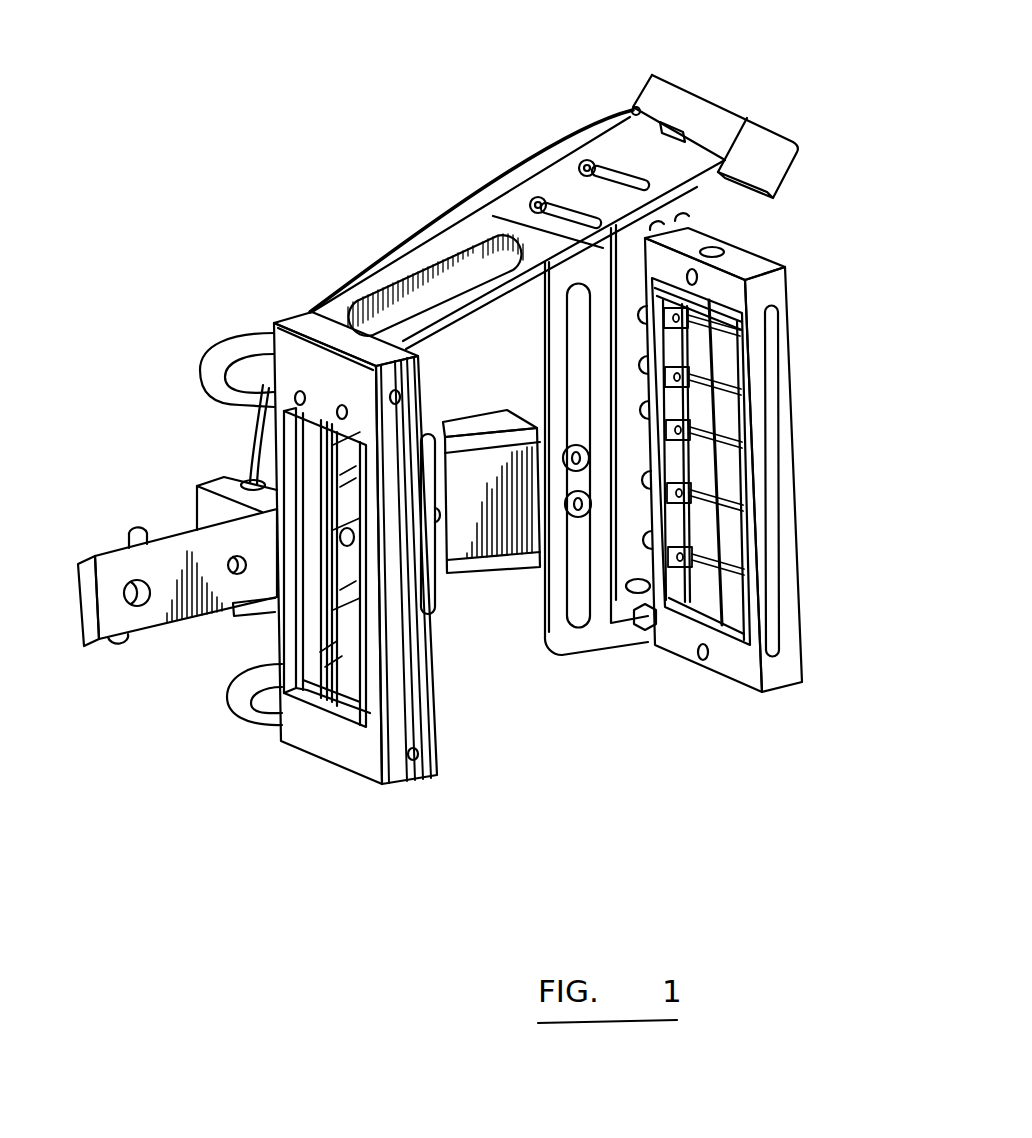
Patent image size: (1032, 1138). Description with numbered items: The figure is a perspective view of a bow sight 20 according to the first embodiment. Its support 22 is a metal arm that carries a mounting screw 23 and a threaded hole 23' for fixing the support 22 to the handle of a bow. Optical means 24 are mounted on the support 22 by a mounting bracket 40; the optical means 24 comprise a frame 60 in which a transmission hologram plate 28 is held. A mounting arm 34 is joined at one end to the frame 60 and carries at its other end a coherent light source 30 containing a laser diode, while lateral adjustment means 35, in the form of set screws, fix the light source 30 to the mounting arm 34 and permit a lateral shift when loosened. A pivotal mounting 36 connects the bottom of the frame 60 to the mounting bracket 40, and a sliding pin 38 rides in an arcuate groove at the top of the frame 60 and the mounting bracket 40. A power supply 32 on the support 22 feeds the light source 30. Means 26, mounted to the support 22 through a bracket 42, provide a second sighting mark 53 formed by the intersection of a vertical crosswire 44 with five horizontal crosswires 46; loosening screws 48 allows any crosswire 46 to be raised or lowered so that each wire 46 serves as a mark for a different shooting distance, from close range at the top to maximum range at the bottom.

The sight 20 is at (586, 786).
The support 22 is at (157, 613).
The mounting screw 23 is at (116, 558).
The threaded hole 23' is at (194, 496).
The optical means 24 is at (305, 285).
The means providing a second sighting mark 26 is at (780, 288).
The transmission hologram plate 28 is at (355, 683).
The coherent light source 30 is at (767, 140).
The power supply 32 is at (483, 420).
The mounting arm 34 is at (487, 220).
The lateral adjustment means 35 is at (612, 138).
The pivotal mounting 36 is at (266, 706).
The sliding pin 38 is at (248, 352).
The mounting bracket 40 is at (440, 667).
The bracket 42 is at (593, 632).
The vertical crosswire 44 is at (712, 612).
The horizontal crosswires 46 is at (742, 437).
The screws 48 is at (650, 540).
The second sighting mark 53 is at (733, 545).
The frame 60 is at (284, 352).